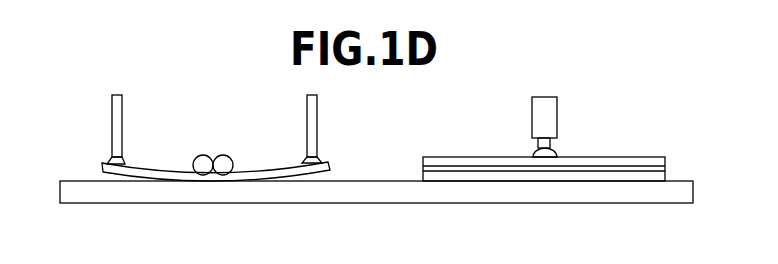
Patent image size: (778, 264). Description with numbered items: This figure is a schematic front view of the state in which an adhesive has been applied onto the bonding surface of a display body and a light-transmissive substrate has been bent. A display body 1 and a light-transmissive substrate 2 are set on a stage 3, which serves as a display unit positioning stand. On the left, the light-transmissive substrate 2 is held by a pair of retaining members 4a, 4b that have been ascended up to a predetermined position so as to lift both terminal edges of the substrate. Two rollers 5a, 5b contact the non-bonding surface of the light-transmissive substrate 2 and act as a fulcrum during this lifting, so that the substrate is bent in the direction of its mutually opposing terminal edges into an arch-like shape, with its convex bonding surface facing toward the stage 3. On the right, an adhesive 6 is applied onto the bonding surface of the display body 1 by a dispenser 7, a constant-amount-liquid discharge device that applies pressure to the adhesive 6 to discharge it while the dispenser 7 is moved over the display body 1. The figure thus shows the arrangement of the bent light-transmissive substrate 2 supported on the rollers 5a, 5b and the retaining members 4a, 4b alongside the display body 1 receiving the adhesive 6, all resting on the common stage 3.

The display body 1 is at (634, 137).
The light-transmissive substrate 2 is at (213, 177).
The stage 3 is at (362, 195).
The retaining member 4a is at (110, 120).
The retaining member 4b is at (318, 113).
The roller 5a is at (203, 155).
The roller 5b is at (223, 155).
The adhesive 6 is at (535, 154).
The dispenser 7 is at (555, 117).